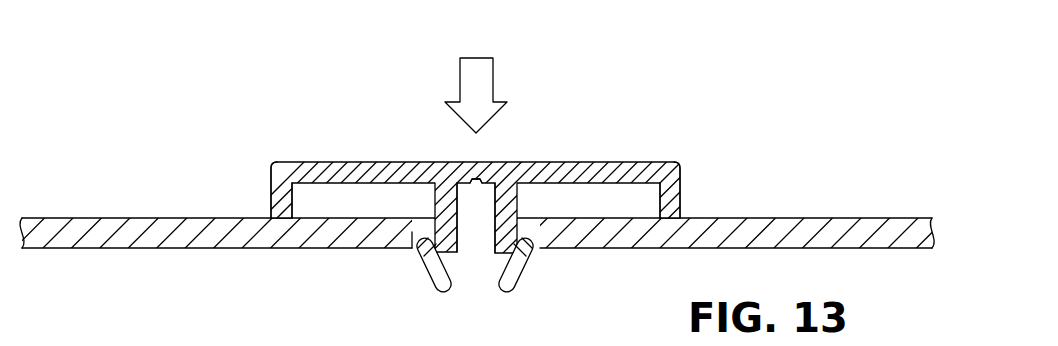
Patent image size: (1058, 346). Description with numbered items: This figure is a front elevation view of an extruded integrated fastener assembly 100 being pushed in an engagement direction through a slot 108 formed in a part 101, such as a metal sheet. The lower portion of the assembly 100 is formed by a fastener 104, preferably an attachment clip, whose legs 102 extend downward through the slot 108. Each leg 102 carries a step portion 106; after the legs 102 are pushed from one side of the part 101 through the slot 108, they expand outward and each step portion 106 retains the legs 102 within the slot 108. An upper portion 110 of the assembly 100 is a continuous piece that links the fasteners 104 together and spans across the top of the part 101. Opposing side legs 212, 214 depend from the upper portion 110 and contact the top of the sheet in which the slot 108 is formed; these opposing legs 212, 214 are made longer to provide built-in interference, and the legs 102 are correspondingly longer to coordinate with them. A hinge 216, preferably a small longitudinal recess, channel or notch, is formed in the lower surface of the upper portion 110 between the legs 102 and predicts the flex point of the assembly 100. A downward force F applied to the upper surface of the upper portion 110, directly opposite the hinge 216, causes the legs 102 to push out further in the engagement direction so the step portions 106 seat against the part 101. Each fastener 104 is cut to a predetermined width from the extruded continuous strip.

The extruded integrated fastener assembly 100 is at (474, 203).
The part 101 is at (873, 222).
The legs 102 is at (437, 288).
The fastener 104 is at (468, 282).
The step portion 106 is at (413, 233).
The slot 108 is at (552, 165).
The upper portion 110 is at (474, 178).
The opposing side leg 212 is at (682, 197).
The opposing side leg 214 is at (270, 203).
The hinge 216 is at (440, 165).
The downward force F is at (493, 78).